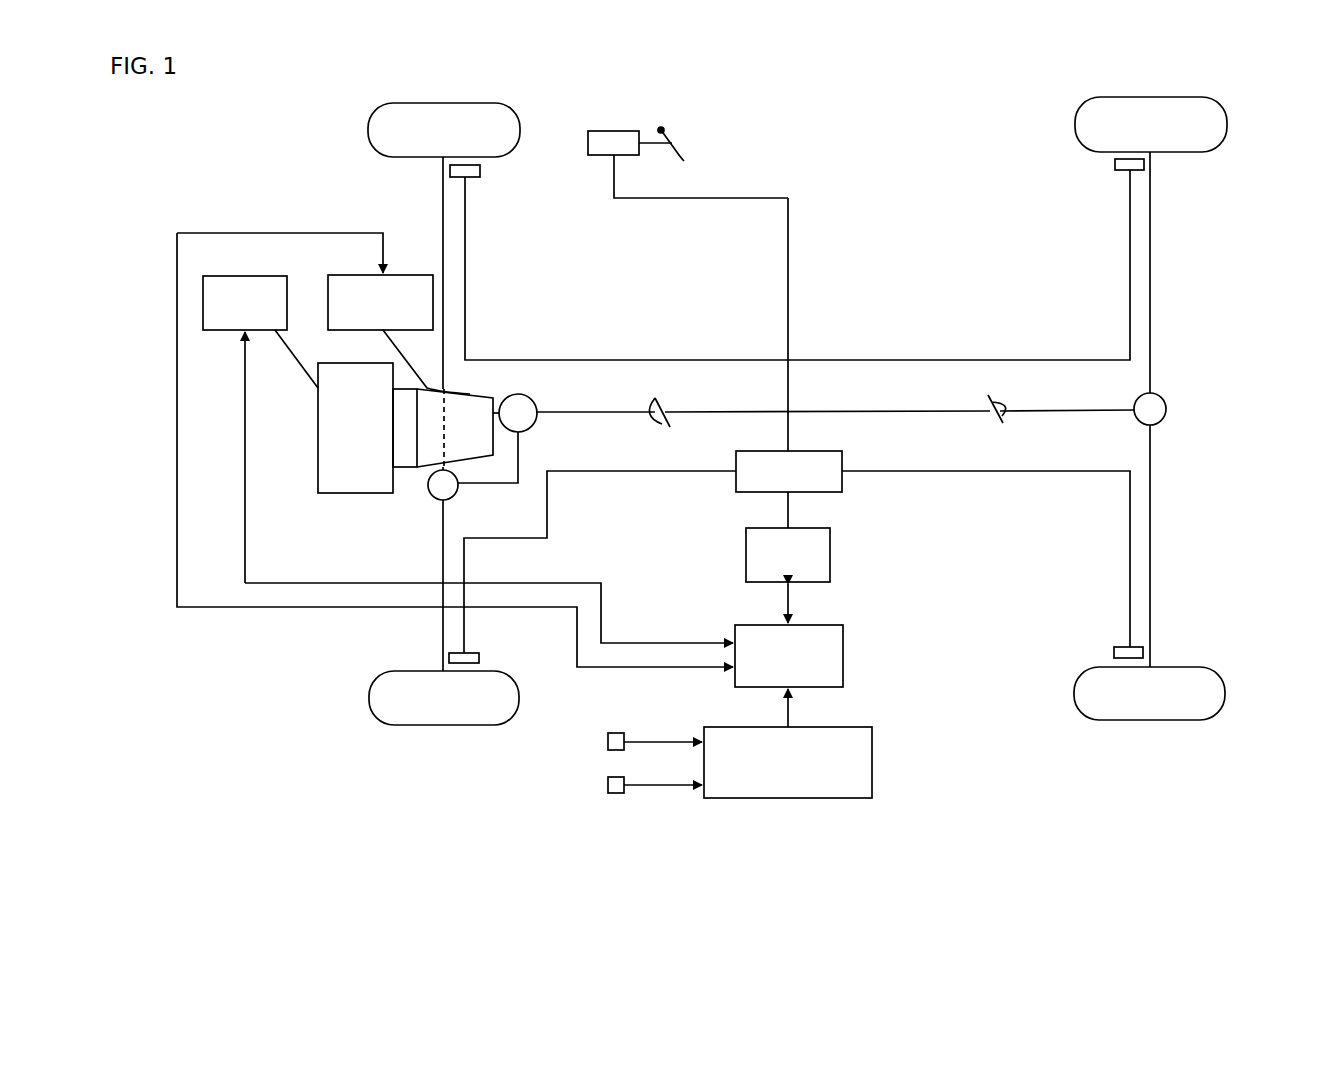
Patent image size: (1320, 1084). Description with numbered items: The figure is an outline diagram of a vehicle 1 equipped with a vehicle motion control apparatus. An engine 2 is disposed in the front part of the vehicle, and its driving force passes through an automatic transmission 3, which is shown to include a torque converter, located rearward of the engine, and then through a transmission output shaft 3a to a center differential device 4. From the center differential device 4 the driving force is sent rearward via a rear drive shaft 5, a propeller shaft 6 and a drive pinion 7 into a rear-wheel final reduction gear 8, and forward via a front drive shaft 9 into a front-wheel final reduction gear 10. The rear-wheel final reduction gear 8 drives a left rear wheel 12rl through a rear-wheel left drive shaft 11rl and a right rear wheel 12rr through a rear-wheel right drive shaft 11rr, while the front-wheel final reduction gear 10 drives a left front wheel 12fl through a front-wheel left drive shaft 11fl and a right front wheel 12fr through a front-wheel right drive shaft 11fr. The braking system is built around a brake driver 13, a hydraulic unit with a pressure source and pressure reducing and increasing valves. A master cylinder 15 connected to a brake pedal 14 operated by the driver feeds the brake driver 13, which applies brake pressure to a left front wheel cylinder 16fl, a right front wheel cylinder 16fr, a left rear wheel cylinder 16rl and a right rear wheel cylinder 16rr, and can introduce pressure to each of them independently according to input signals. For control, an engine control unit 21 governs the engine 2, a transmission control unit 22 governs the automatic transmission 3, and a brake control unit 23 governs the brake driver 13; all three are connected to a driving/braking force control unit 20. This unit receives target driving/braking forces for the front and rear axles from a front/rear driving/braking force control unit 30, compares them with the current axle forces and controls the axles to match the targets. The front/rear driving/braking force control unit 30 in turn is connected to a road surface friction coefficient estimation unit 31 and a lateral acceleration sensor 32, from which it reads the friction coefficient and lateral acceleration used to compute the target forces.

The vehicle 1 is at (887, 146).
The engine 2 is at (355, 493).
The automatic transmission 3 is at (478, 455).
The transmission output shaft 3a is at (496, 400).
The center differential device 4 is at (533, 401).
The rear drive shaft 5 is at (593, 412).
The propeller shaft 6 is at (900, 412).
The drive pinion 7 is at (1058, 411).
The rear-wheel final reduction gear 8 is at (1138, 397).
The front drive shaft 9 is at (487, 483).
The front-wheel final reduction gear 10 is at (432, 497).
The front-wheel right drive shaft 11fr is at (443, 198).
The front-wheel left drive shaft 11fl is at (443, 556).
The rear-wheel right drive shaft 11rr is at (1151, 280).
The rear-wheel left drive shaft 11rl is at (1150, 513).
The right front wheel 12fr is at (368, 131).
The left front wheel 12fl is at (369, 700).
The right rear wheel 12rr is at (1227, 120).
The left rear wheel 12rl is at (1196, 720).
The brake driver 13 is at (842, 485).
The brake pedal 14 is at (676, 142).
The master cylinder 15 is at (610, 131).
The right front wheel cylinder 16fr is at (480, 171).
The left front wheel cylinder 16fl is at (466, 652).
The right rear wheel cylinder 16rr is at (1115, 165).
The left rear wheel cylinder 16rl is at (1114, 652).
The driving/braking force control unit 20 is at (843, 650).
The engine control unit 21 is at (252, 276).
The transmission control unit 22 is at (402, 275).
The brake control unit 23 is at (830, 553).
The front/rear driving/braking force control unit 30 is at (872, 760).
The road surface friction coefficient estimation unit 31 is at (608, 742).
The lateral acceleration sensor 32 is at (608, 785).